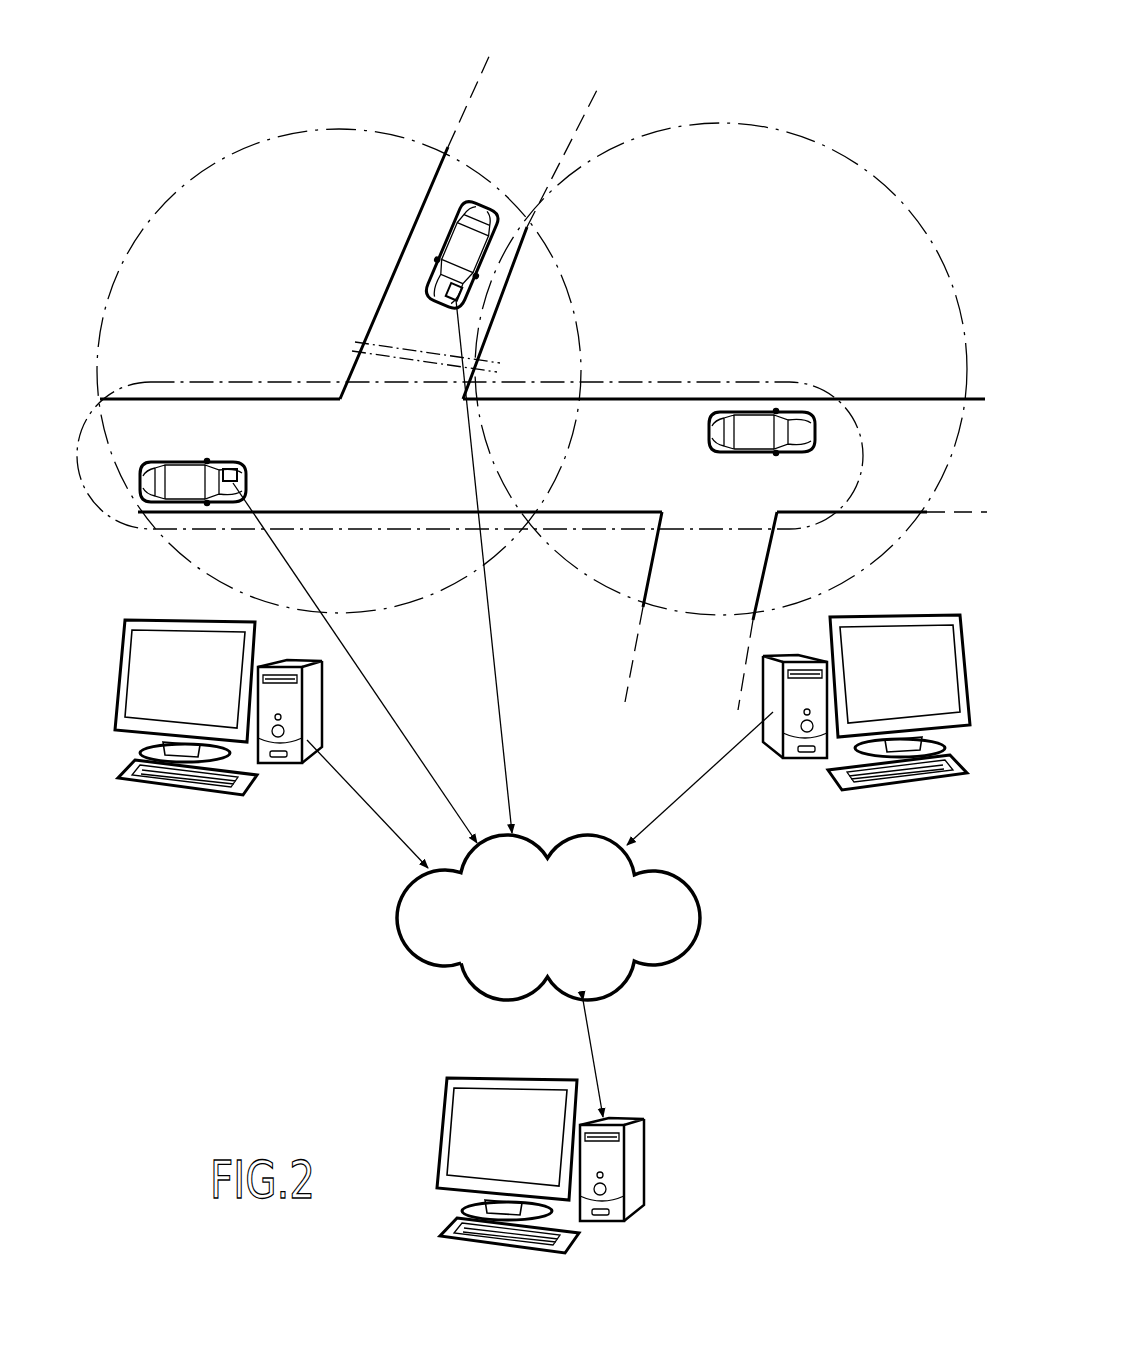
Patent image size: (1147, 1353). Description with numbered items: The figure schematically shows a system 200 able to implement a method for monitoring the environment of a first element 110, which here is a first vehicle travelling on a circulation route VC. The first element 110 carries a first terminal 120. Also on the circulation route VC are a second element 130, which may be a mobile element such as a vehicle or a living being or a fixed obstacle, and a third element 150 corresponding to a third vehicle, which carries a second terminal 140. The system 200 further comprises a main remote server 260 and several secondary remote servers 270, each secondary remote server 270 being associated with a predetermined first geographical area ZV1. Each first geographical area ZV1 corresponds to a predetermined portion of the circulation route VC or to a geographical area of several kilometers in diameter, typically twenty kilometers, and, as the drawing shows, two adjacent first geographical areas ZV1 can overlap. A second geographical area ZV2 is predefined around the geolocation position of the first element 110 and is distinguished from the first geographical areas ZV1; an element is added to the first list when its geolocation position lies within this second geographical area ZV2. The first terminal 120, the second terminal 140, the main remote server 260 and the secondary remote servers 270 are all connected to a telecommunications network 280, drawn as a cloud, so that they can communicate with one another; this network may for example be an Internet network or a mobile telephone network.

The first element 110 is at (185, 478).
The first terminal 120 is at (236, 470).
The second element 130 is at (768, 430).
The second terminal 140 is at (446, 296).
The third element 150 is at (470, 246).
The system 200 is at (532, 651).
The main remote server 260 is at (622, 1120).
The secondary remote server 270 is at (283, 761).
The telecommunications network 280 is at (578, 932).
The first geographical area ZV1 is at (336, 129).
The second geographical area ZV2 is at (640, 381).
The circulation route VC is at (360, 513).